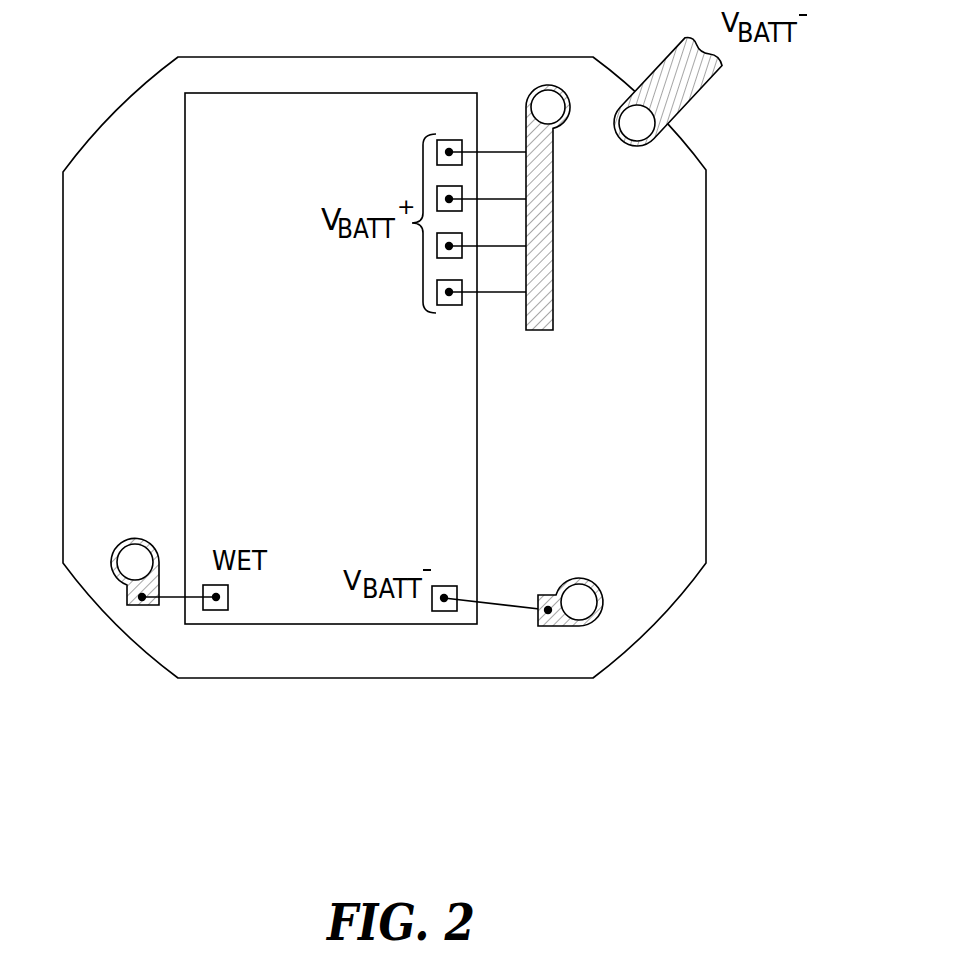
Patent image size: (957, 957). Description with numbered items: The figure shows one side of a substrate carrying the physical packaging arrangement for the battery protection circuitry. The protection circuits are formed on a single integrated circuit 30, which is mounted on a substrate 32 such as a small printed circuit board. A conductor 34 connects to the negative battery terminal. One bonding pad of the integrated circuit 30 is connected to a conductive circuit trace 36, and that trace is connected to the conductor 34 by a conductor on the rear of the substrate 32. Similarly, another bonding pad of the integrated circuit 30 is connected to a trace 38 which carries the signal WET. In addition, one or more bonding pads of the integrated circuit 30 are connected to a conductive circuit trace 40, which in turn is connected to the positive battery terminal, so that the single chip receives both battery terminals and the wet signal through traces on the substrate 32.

The integrated circuit 30 is at (329, 429).
The substrate 32 is at (706, 322).
The conductor 34 is at (700, 96).
The conductive circuit trace 36 is at (568, 627).
The trace 38 is at (128, 603).
The conductive circuit trace 40 is at (556, 167).